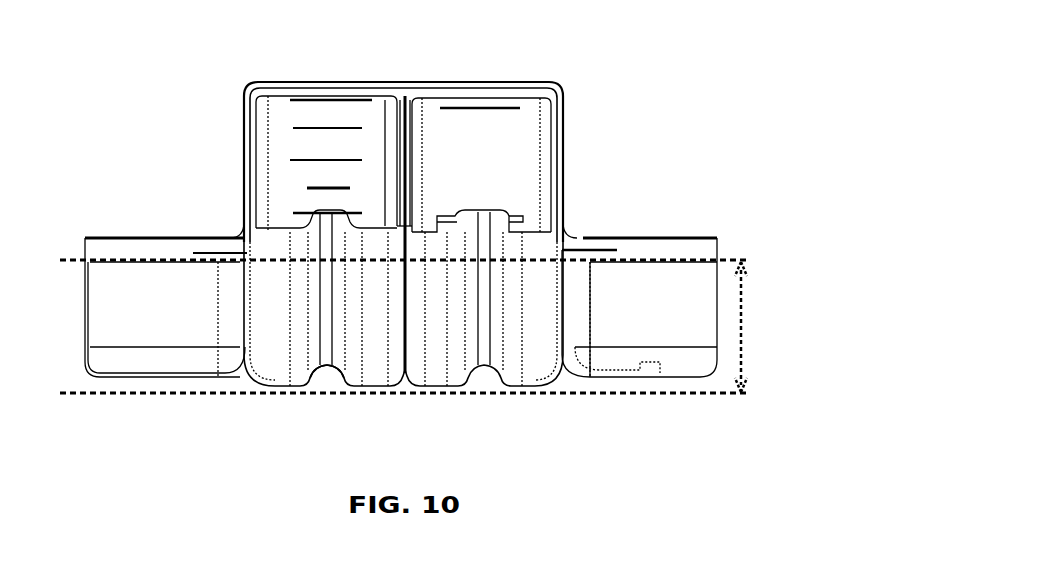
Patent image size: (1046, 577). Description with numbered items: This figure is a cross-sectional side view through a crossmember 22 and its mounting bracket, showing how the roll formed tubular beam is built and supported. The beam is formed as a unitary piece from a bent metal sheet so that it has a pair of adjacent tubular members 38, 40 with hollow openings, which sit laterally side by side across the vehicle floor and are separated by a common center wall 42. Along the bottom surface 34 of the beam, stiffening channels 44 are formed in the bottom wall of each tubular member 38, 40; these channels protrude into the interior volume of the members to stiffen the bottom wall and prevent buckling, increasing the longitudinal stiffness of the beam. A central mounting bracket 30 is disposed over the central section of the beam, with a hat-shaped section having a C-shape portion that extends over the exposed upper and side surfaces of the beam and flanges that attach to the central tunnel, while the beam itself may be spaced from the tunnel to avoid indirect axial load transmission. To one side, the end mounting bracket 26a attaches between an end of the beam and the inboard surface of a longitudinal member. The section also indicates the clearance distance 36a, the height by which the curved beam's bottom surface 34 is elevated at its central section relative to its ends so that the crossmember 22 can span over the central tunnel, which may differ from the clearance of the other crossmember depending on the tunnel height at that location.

The central mounting bracket 30 is at (250, 88).
The common center wall 42 is at (403, 155).
The tubular member 38 is at (290, 175).
The tubular member 40 is at (502, 172).
The crossmember 22 is at (537, 250).
The mounting bracket 26a is at (115, 238).
The clearance distance 36a is at (741, 344).
The stiffening channel 44 is at (327, 367).
The bottom surface 34 is at (437, 327).